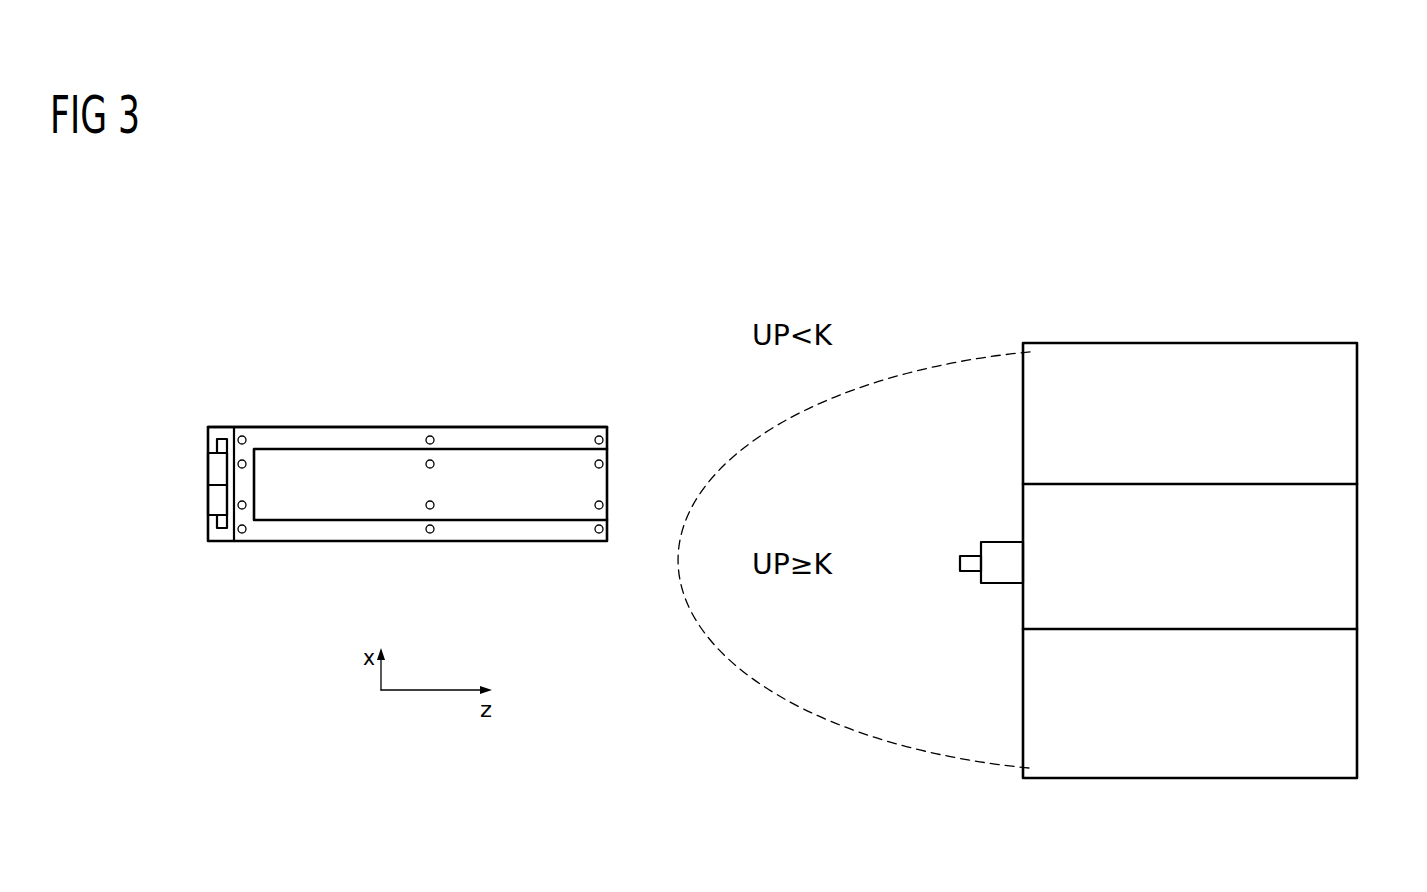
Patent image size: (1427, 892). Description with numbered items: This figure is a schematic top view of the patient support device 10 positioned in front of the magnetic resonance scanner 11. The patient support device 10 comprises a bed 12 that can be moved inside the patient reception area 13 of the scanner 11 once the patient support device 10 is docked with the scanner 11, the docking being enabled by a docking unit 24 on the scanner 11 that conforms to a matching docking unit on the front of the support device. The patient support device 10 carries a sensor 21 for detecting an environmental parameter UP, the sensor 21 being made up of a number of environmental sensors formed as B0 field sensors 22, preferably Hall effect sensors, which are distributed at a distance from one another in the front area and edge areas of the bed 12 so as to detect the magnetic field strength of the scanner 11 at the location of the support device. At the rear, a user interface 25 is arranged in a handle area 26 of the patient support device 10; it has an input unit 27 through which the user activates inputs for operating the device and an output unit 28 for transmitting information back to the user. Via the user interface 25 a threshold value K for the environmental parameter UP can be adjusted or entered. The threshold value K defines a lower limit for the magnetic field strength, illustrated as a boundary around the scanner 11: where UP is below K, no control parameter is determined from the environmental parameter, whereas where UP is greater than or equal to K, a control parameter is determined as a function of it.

The patient support device 10 is at (551, 336).
The magnetic resonance scanner 11 is at (1351, 330).
The bed 12 is at (518, 436).
The patient reception area 13 is at (1016, 513).
The sensor 21 is at (226, 424).
The B0 field sensor 22 is at (246, 436).
The docking unit 24 is at (998, 586).
The user interface 25 is at (198, 476).
The handle area 26 is at (205, 550).
The input unit 27 is at (212, 467).
The output unit 28 is at (213, 500).
The threshold value K is at (662, 675).